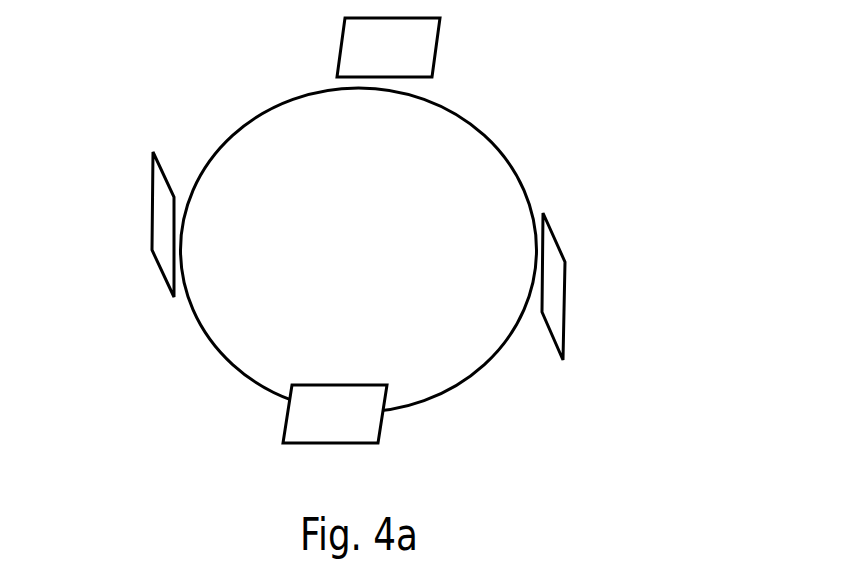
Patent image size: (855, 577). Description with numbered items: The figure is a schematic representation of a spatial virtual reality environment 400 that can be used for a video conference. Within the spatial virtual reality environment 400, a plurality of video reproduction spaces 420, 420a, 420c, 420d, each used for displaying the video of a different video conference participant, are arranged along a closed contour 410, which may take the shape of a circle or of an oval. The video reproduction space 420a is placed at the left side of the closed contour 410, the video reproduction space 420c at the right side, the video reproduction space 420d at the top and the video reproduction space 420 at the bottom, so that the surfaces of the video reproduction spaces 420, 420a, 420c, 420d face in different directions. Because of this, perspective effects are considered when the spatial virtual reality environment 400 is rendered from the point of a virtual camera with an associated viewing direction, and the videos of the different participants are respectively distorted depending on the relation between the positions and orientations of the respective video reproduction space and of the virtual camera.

The spatial virtual reality environment 400 is at (694, 78).
The closed contour 410 is at (521, 179).
The video reproduction space 420 is at (287, 417).
The video reproduction space 420a is at (153, 202).
The video reproduction space 420c is at (565, 298).
The video reproduction space 420d is at (437, 46).